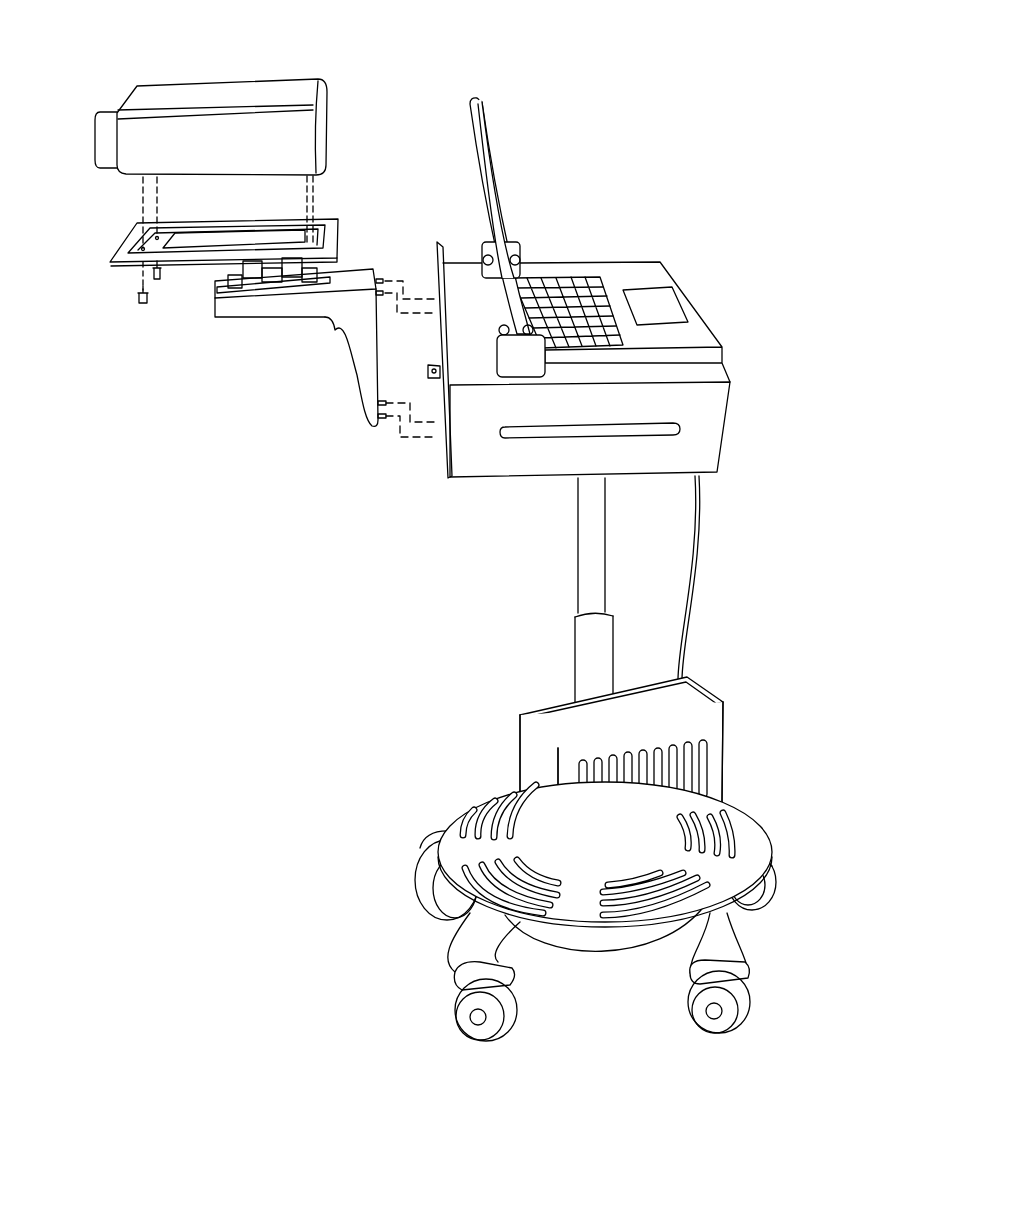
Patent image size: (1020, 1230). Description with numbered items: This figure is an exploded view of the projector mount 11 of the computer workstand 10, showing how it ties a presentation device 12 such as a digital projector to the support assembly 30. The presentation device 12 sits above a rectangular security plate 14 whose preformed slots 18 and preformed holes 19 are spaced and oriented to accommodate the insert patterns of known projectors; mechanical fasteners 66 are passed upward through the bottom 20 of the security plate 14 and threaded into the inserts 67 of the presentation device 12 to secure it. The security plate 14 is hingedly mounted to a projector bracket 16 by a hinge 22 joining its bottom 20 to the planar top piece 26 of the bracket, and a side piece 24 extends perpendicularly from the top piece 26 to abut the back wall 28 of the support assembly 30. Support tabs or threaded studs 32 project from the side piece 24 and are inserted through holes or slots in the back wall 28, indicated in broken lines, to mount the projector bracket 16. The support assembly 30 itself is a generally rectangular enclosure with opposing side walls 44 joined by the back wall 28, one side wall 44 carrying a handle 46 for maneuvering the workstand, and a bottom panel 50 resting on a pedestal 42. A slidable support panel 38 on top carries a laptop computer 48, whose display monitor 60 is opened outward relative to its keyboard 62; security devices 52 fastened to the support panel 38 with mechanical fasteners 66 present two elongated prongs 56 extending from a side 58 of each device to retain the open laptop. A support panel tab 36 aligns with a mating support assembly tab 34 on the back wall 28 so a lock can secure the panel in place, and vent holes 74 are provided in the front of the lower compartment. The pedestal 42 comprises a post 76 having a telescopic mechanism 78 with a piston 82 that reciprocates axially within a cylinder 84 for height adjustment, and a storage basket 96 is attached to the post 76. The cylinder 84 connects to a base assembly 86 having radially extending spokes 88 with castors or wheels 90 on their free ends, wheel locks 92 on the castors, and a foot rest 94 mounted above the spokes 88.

The computer workstand 10 is at (165, 595).
The projector mount 11 is at (90, 262).
The presentation device 12 is at (216, 70).
The security plate 14 is at (128, 246).
The projector bracket 16 is at (185, 285).
The preformed slots 18 is at (313, 234).
The preformed holes 19 is at (217, 240).
The bottom of security plate 20 is at (142, 266).
The hinge 22 is at (215, 271).
The side piece 24 is at (358, 372).
The top piece 26 is at (272, 308).
The back wall 28 is at (430, 460).
The support assembly 30 is at (780, 236).
The support tabs or threaded studs 32 is at (381, 281).
The support assembly tab 34 is at (372, 420).
The support panel tab 36 is at (427, 374).
The support panel 38 is at (705, 373).
The pedestal 42 is at (762, 511).
The side walls 44 is at (590, 429).
The handle 46 is at (668, 433).
The laptop computer 48 is at (608, 136).
The bottom panel 50 is at (632, 476).
The security devices 52 is at (517, 243).
The prongs 56 is at (484, 262).
The side of security device 58 is at (510, 367).
The display monitor 60 is at (480, 128).
The keyboard 62 is at (688, 303).
The mechanical fasteners 66 is at (140, 300).
The inserts 67 is at (152, 183).
The vent holes 74 is at (708, 786).
The post 76 is at (495, 498).
The telescopic mechanism 78 is at (602, 620).
The piston 82 is at (590, 540).
The cylinder 84 is at (587, 670).
The base assembly 86 is at (812, 762).
The spokes 88 is at (428, 842).
The castors 90 is at (513, 1017).
The wheel lock 92 is at (512, 973).
The foot rest 94 is at (470, 807).
The storage basket 96 is at (717, 727).